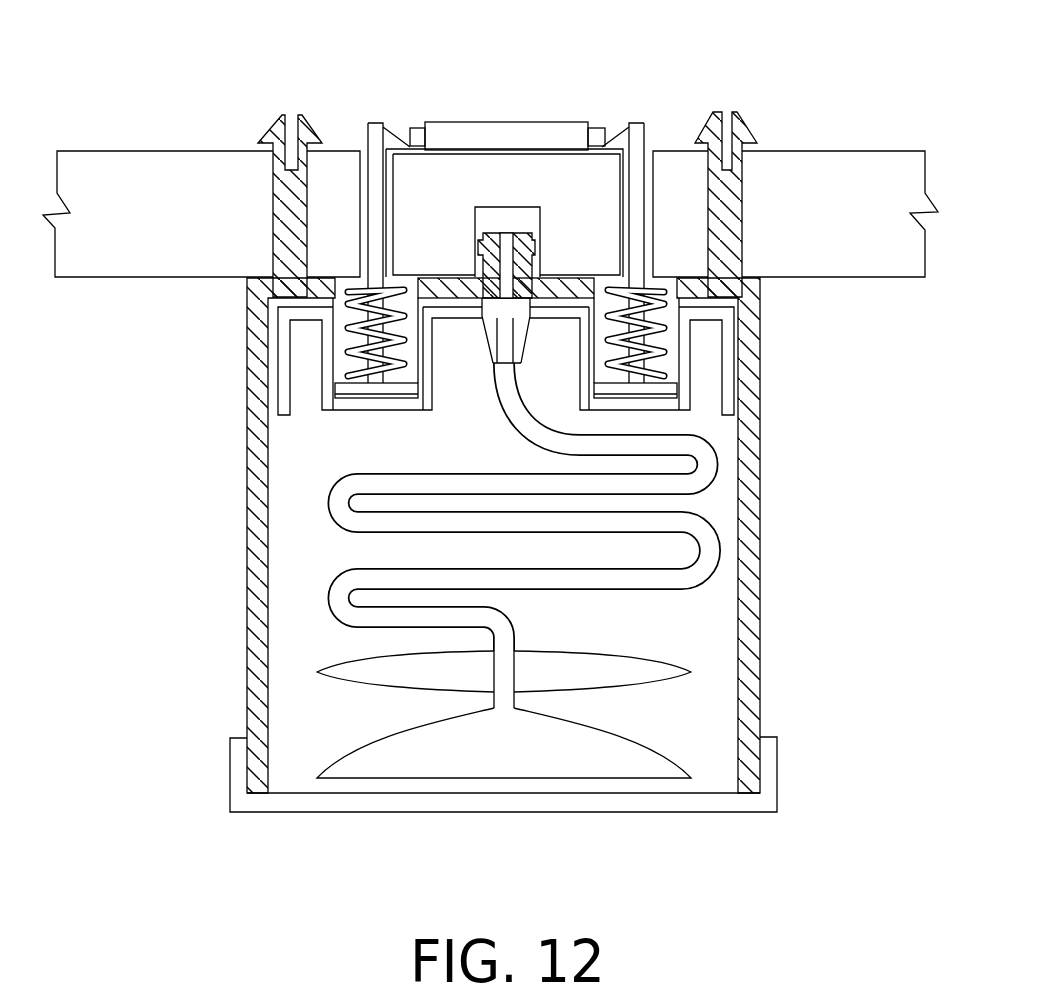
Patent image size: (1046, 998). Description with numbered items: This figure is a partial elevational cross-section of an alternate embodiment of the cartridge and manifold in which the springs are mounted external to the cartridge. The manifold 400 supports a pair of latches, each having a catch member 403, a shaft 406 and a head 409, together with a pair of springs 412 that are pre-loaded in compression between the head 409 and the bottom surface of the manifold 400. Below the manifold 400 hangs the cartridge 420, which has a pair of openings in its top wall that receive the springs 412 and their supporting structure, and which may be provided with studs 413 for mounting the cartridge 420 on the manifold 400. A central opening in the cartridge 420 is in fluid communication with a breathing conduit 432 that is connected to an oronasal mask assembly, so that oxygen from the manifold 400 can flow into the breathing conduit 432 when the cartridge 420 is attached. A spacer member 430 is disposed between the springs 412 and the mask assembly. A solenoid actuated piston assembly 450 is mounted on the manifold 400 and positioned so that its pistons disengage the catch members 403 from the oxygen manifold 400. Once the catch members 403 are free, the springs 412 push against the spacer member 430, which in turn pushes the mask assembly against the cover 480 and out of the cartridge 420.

The manifold 400 is at (202, 165).
The catch member 403 is at (377, 133).
The shaft 406 is at (645, 147).
The head 409 is at (372, 389).
The springs 412 is at (667, 358).
The studs 413 is at (283, 114).
The cartridge 420 is at (247, 573).
The spacer member 430 is at (283, 389).
The breathing conduit 432 is at (708, 458).
The solenoid actuated piston assembly 450 is at (515, 128).
The cover 480 is at (768, 766).